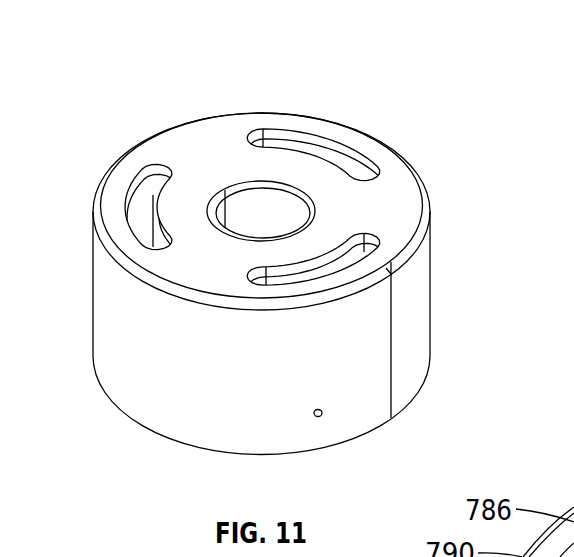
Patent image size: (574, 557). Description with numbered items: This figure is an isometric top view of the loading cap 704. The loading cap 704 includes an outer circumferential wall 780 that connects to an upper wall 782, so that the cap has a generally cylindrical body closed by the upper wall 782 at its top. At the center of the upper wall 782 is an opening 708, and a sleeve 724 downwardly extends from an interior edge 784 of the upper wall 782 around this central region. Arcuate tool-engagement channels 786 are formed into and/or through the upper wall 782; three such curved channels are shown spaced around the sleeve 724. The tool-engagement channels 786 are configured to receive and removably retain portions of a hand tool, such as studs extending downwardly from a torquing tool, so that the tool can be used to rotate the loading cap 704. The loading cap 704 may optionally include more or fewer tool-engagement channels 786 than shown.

The loading cap 704 is at (284, 252).
The central bore 708 is at (252, 146).
The sleeve 724 is at (238, 205).
The outer circumferential wall 780 is at (418, 297).
The upper wall 782 is at (392, 183).
The interior edge 784 is at (303, 188).
The tool-engagement channels 786 is at (153, 180).